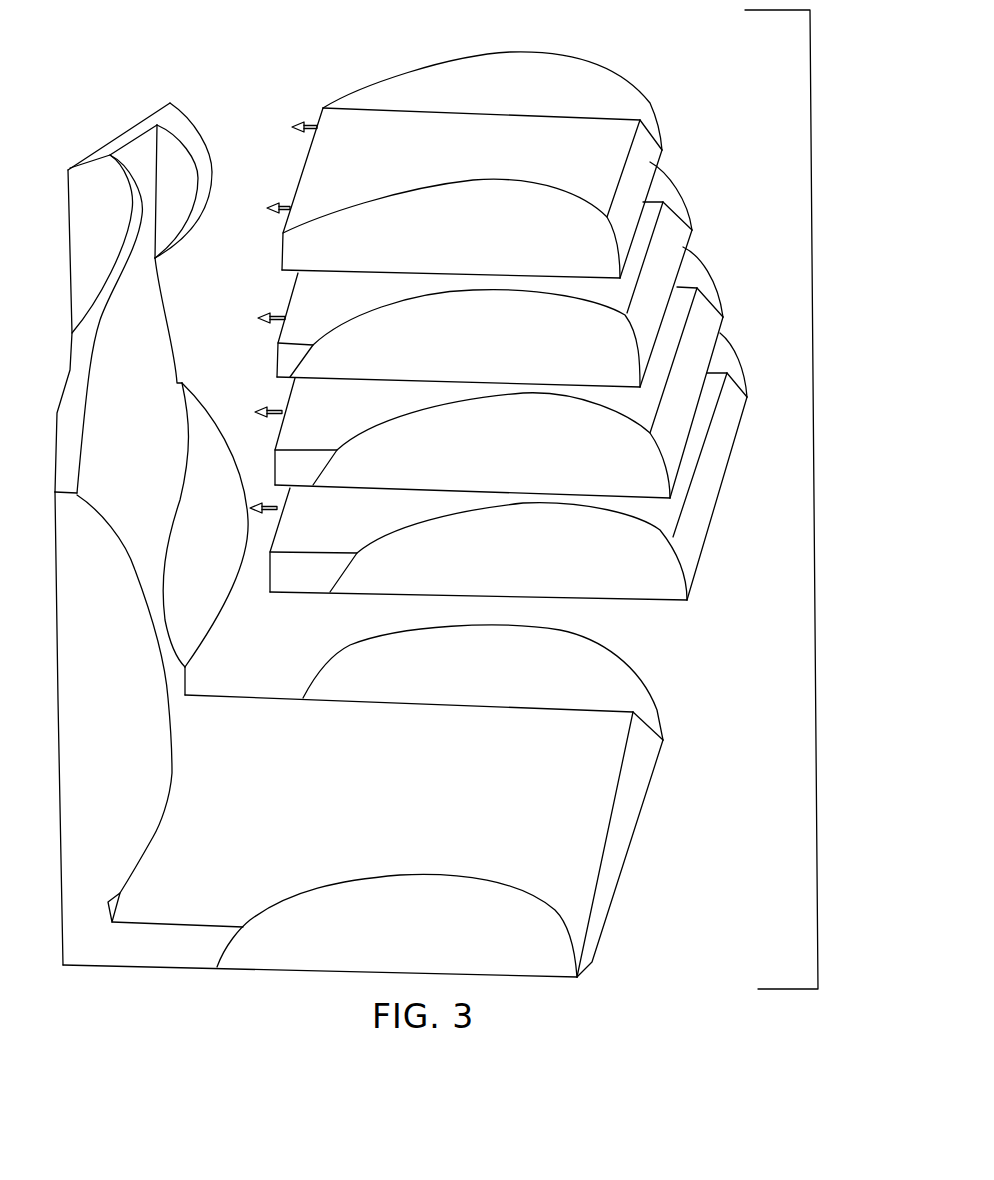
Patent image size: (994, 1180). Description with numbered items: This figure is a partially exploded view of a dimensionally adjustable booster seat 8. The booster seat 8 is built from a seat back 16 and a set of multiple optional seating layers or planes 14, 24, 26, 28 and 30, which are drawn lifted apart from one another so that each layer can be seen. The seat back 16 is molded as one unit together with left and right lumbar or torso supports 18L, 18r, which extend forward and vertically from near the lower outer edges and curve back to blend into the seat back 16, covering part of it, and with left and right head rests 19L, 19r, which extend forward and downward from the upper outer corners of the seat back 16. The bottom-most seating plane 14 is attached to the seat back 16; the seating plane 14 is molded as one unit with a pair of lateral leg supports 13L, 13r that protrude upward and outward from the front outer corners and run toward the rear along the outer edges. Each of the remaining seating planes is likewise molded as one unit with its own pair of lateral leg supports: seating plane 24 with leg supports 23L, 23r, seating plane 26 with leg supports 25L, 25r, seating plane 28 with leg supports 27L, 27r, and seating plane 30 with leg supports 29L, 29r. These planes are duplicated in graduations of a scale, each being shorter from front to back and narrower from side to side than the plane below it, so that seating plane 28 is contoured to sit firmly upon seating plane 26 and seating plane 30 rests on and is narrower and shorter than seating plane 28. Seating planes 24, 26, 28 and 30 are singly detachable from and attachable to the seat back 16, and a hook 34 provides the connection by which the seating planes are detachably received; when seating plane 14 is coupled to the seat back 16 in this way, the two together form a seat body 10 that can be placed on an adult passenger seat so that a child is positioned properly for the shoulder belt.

The dimensionally adjustable booster seat 8 is at (812, 300).
The seat body 10 is at (192, 694).
The lateral leg support 13L is at (494, 684).
The lateral leg support 13r is at (424, 936).
The optional seating plane 14 is at (472, 828).
The seat back 16 is at (137, 471).
The torso support 18L is at (208, 576).
The torso support 18r is at (132, 686).
The head rest 19L is at (210, 148).
The head rest 19r is at (118, 238).
The lateral leg support 23L is at (748, 372).
The lateral leg support 23r is at (547, 573).
The optional seating plane 24 is at (319, 531).
The lateral leg support 25L is at (720, 295).
The lateral leg support 25r is at (542, 466).
The optional seating plane 26 is at (323, 438).
The lateral leg support 27L is at (693, 208).
The lateral leg support 27r is at (531, 354).
The optional seating plane 28 is at (324, 323).
The lateral leg support 29L is at (653, 110).
The lateral leg support 29r is at (524, 254).
The optional seating plane 30 is at (338, 188).
The hook 34 is at (306, 131).